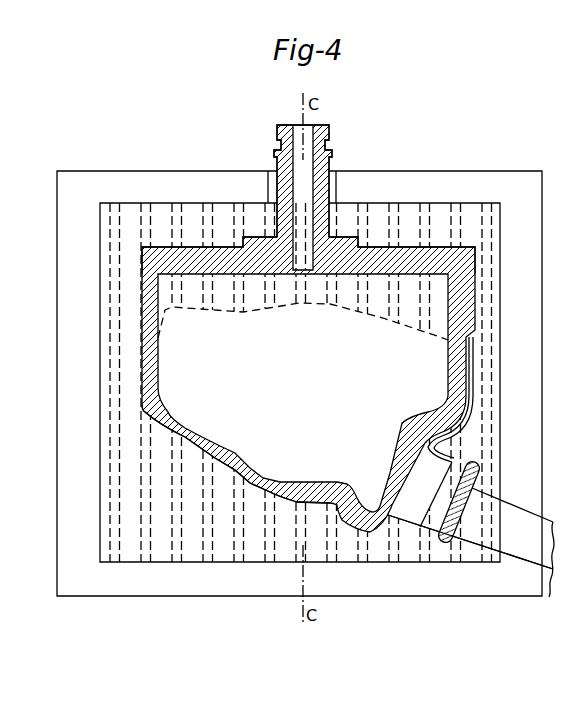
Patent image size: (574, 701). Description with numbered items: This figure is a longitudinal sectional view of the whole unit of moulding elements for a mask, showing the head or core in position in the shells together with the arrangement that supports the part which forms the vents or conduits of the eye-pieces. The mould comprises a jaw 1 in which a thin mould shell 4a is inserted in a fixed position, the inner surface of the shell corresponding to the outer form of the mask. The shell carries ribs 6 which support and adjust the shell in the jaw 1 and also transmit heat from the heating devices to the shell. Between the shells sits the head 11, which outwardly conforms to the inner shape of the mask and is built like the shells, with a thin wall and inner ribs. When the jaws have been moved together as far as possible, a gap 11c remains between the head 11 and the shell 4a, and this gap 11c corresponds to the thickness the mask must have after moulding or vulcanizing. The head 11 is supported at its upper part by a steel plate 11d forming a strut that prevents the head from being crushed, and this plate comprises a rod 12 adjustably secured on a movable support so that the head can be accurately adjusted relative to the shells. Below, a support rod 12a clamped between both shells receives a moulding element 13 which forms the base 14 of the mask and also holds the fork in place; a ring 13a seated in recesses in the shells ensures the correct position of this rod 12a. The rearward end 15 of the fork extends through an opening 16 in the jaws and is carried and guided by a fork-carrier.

The jaw 1 is at (525, 198).
The mould shell 4a is at (250, 555).
The ribs of the shells 6 is at (147, 502).
The head or core 11 is at (458, 367).
The gap 11c is at (233, 472).
The steel plate 11d is at (377, 257).
The rod 12 is at (322, 153).
The support rod 12a is at (556, 566).
The moulding element 13 is at (403, 502).
The ring 13a is at (450, 543).
The base of the mask 14 is at (452, 458).
The rearward end of the fork 15 is at (515, 517).
The opening 16 is at (506, 553).